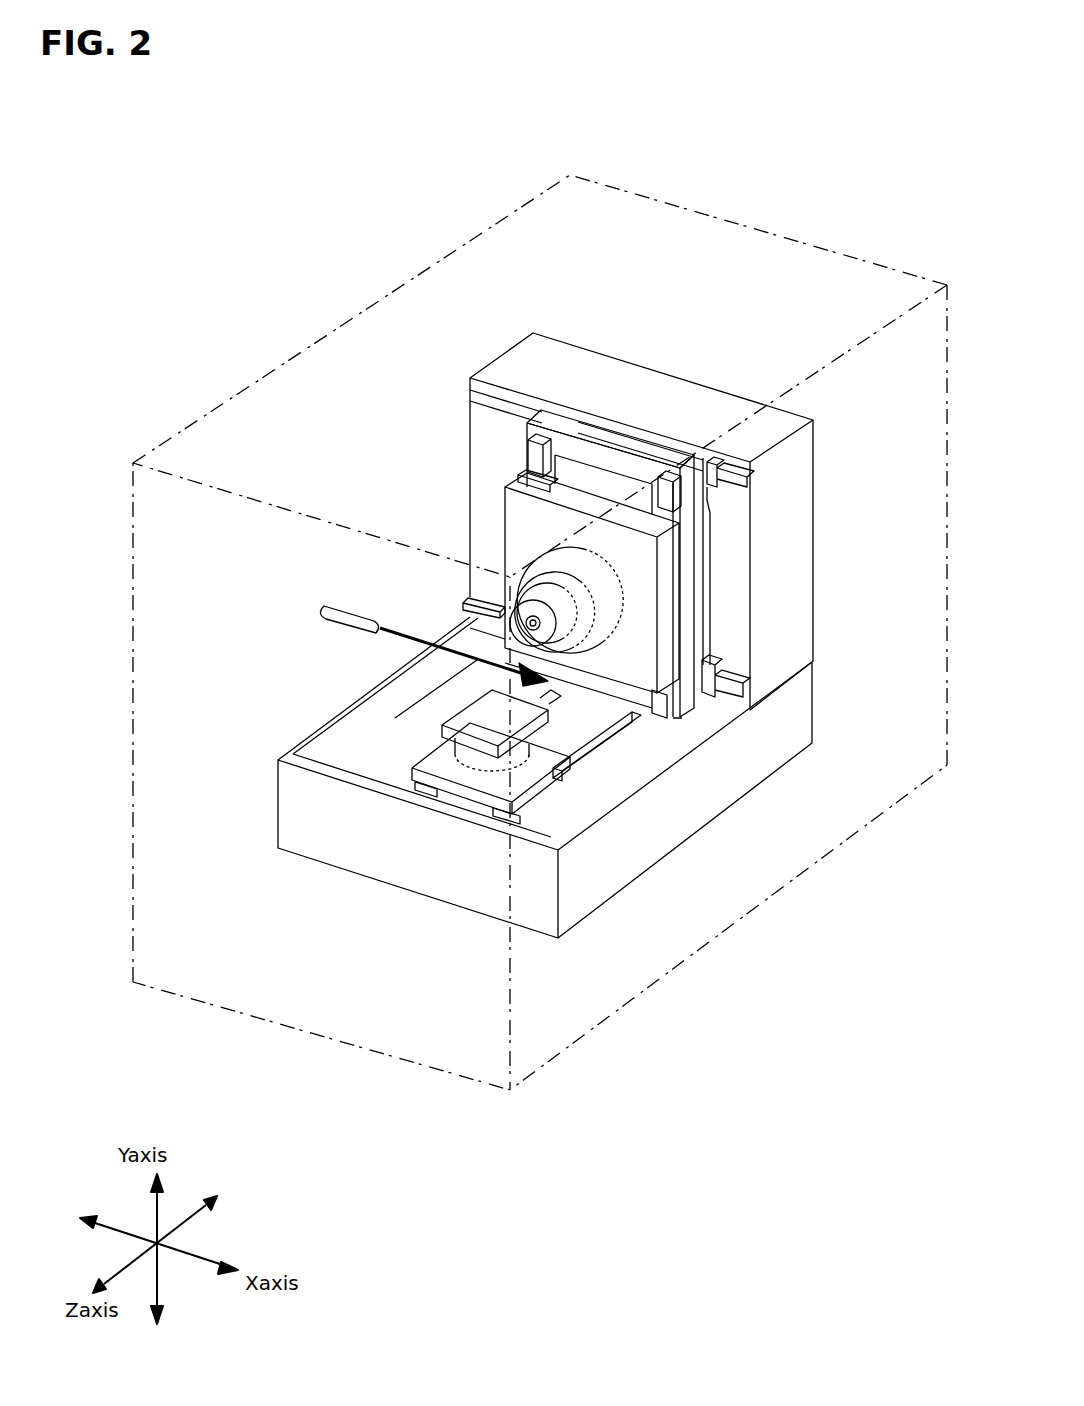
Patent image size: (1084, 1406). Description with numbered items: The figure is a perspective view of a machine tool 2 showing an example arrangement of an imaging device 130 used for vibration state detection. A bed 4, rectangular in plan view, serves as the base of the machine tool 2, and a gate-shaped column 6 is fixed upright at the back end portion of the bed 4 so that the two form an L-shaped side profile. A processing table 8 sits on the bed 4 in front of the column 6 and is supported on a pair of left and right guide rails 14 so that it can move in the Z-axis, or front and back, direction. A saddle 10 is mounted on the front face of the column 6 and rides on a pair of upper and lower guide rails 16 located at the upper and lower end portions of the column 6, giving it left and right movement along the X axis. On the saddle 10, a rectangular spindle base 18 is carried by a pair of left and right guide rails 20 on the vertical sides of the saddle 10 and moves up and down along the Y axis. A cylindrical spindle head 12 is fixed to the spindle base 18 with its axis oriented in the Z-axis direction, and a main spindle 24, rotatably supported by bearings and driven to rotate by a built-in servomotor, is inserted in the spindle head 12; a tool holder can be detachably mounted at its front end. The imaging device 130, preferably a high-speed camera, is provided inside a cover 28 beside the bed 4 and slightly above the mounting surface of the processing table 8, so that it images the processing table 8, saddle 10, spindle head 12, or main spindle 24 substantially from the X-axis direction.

The machine tool 2 is at (587, 656).
The bed 4 is at (675, 822).
The column 6 is at (778, 508).
The processing table 8 is at (443, 772).
The saddle 10 is at (702, 640).
The spindle head 12 is at (578, 568).
The guide rails 14 is at (597, 738).
The guide rails 16 is at (472, 398).
The spindle base 18 is at (548, 508).
The guide rails 20 is at (532, 458).
The main spindle 24 is at (560, 600).
The cover 28 is at (590, 1028).
The imaging device 130 is at (322, 612).